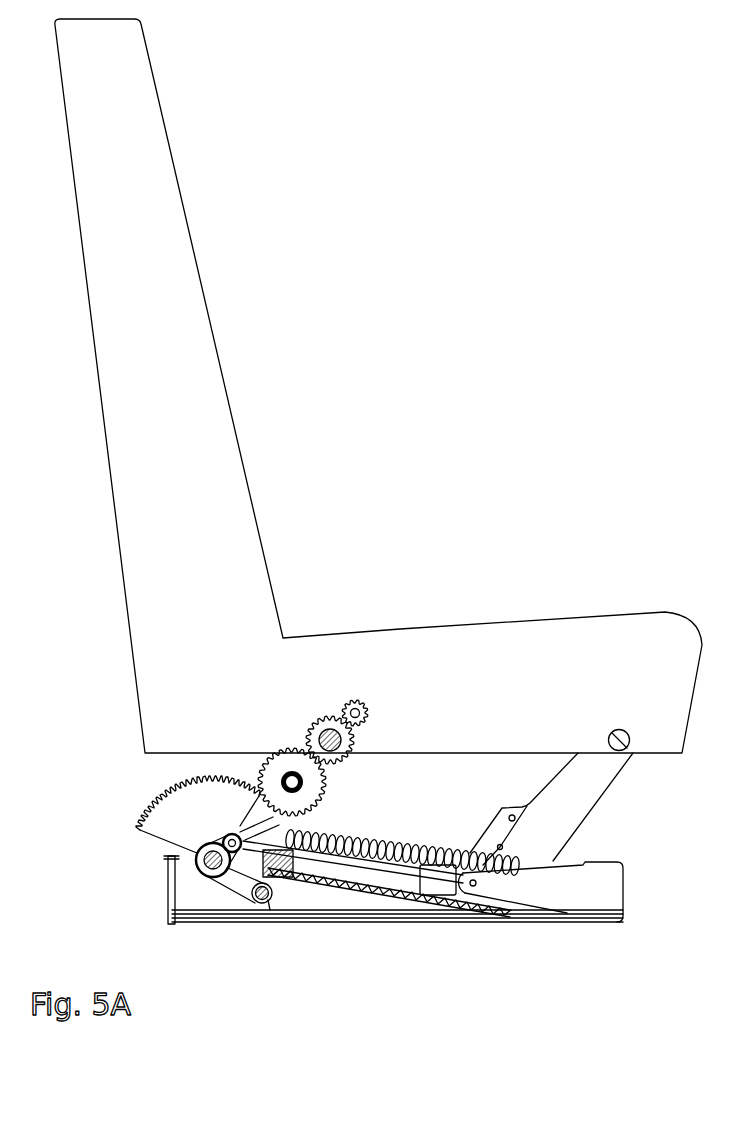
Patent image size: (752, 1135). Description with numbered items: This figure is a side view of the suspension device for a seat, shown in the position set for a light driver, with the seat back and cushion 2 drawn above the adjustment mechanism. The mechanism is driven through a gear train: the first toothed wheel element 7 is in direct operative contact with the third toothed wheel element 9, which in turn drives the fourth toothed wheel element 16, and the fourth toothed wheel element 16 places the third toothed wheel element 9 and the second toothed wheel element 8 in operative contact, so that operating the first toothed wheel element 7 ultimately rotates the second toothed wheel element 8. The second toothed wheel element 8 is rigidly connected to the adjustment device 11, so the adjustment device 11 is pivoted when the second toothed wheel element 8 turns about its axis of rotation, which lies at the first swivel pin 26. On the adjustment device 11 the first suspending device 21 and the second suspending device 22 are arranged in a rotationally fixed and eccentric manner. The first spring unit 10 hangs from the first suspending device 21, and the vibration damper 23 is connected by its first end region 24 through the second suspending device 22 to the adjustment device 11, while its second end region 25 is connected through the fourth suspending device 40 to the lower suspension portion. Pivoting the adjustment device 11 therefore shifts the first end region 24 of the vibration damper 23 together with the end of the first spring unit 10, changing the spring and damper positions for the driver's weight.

The backrest 2 is at (152, 152).
The first toothed wheel element 7 is at (347, 703).
The second toothed wheel element 8 is at (158, 830).
The third toothed wheel element 9 is at (318, 718).
The first spring unit 10 is at (408, 846).
The adjustment device 11 is at (140, 873).
The fourth toothed wheel element 16 is at (283, 752).
The first suspending device 21 is at (238, 827).
The second suspending device 22 is at (228, 855).
The vibration damper 23 is at (402, 877).
The first end region of the vibration damper 24 is at (263, 904).
The second end region of the vibration damper 25 is at (457, 895).
The first swivel pin 26 is at (172, 895).
The fourth suspending device 40 is at (560, 902).